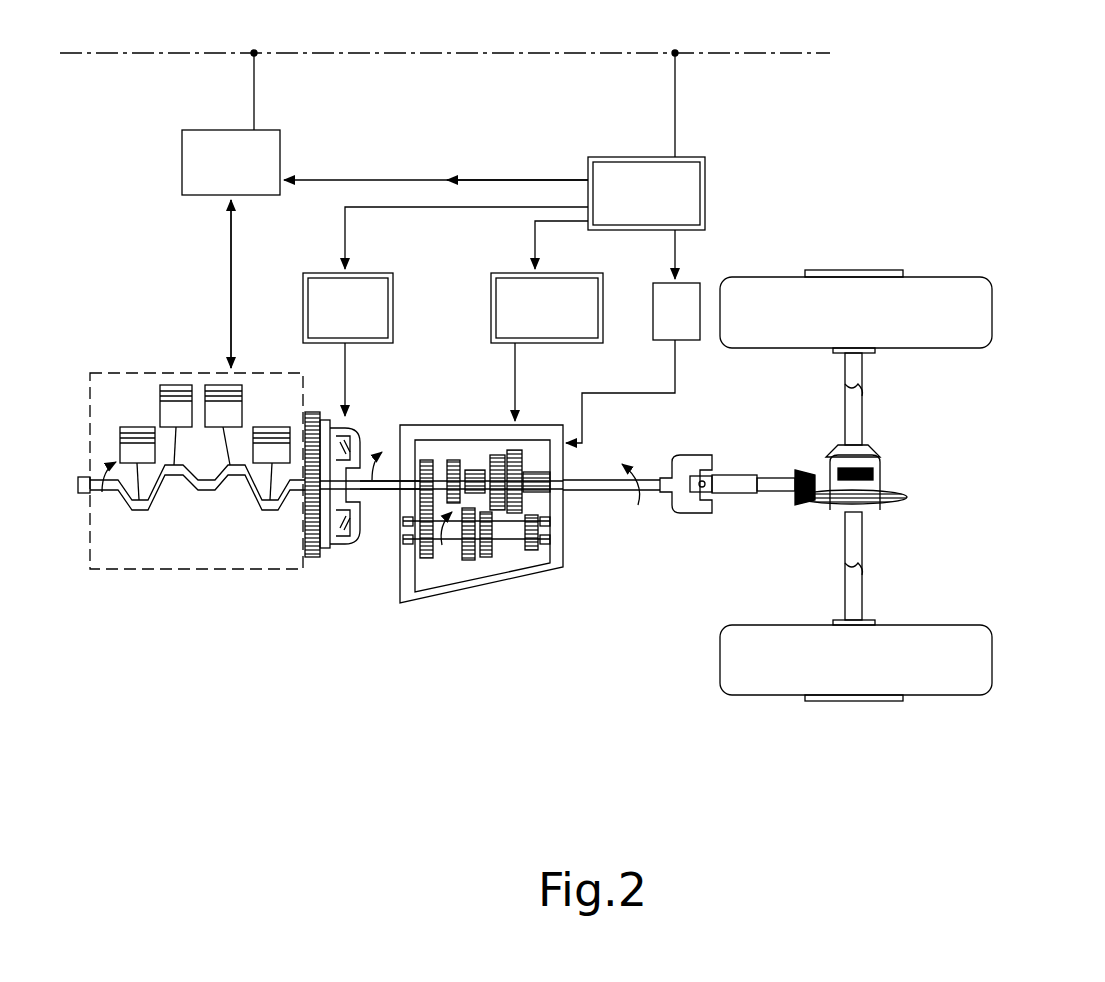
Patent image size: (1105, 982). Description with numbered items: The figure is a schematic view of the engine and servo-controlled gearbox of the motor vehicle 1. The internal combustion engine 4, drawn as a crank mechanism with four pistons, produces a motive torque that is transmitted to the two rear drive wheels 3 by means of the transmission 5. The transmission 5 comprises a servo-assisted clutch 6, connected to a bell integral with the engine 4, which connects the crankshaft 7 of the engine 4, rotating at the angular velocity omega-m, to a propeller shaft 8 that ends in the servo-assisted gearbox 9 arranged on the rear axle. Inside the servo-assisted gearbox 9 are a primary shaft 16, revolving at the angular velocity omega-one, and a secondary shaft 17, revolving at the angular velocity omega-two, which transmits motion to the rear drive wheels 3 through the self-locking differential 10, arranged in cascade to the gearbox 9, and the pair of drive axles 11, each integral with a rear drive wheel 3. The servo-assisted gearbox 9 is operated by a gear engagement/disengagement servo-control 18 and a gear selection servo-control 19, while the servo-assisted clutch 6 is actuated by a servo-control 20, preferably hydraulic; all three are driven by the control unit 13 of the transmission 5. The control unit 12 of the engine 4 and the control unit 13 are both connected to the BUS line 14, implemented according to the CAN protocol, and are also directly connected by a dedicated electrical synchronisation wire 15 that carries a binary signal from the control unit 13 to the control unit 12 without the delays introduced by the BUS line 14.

The motor vehicle 1 is at (992, 202).
The rear drive wheels 3 is at (925, 290).
The internal combustion engine 4 is at (160, 366).
The transmission 5 is at (490, 600).
The servo-assisted clutch 6 is at (338, 550).
The crankshaft 7 is at (245, 488).
The propeller shaft 8 is at (372, 470).
The servo-assisted gearbox 9 is at (432, 624).
The self-locking differential 10 is at (890, 502).
The drive axles 11 is at (862, 420).
The control unit of engine 12 is at (270, 140).
The control unit of transmission 13 is at (615, 170).
The BUS line 14 is at (563, 53).
The dedicated electrical synchronisation wire 15 is at (472, 180).
The primary shaft 16 is at (540, 535).
The secondary shaft 17 is at (536, 488).
The gear engagement/disengagement servo-control 18 is at (603, 293).
The gear selection servo-control 19 is at (690, 300).
The servo-control 20 is at (393, 293).